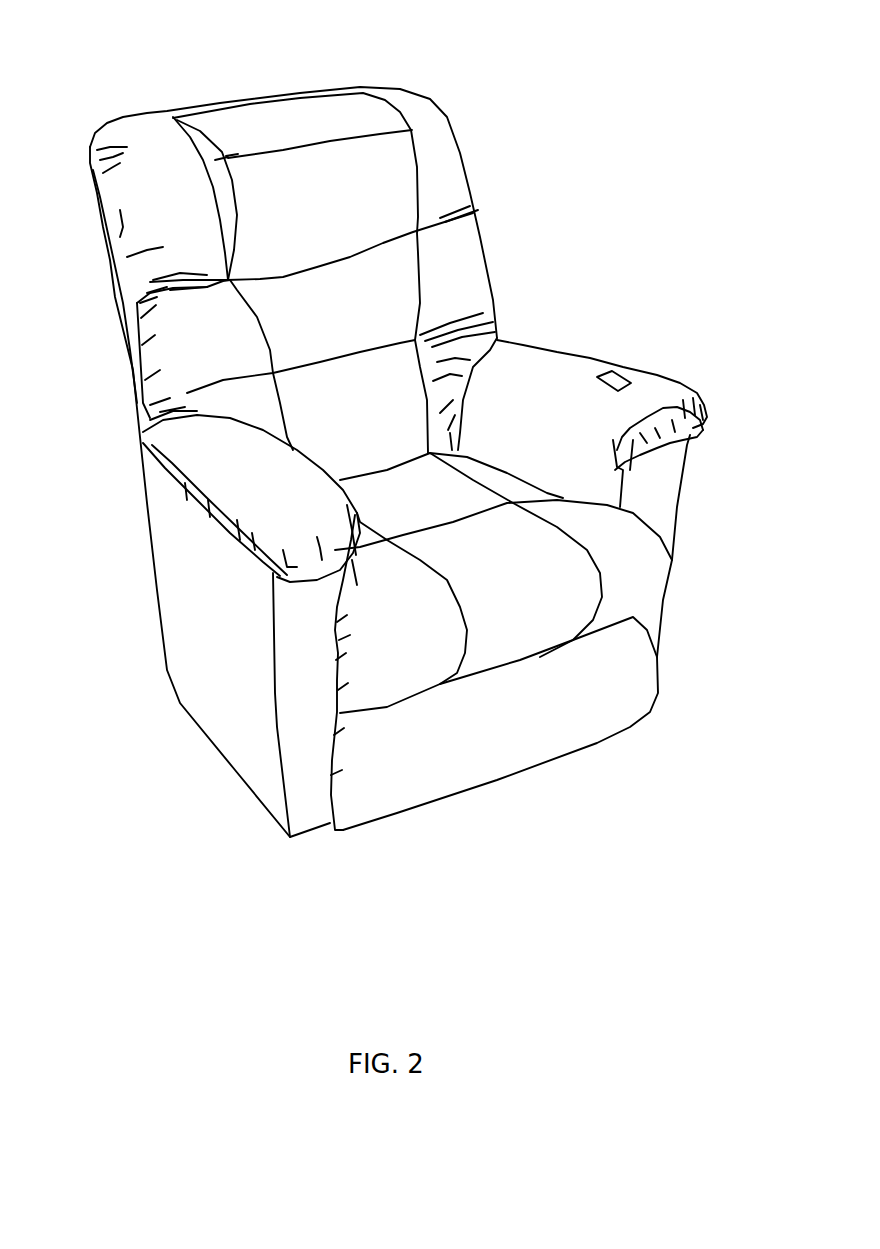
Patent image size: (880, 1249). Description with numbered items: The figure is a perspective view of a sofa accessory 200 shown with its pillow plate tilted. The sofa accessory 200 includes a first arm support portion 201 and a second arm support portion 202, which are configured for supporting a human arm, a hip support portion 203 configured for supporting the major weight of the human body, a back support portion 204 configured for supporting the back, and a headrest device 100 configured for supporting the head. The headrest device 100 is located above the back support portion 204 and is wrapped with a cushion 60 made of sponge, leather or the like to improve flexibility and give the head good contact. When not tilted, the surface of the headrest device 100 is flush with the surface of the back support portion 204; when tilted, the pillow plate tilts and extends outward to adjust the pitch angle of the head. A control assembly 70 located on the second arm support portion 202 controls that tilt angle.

The sofa accessory 200 is at (345, 70).
The headrest device 100 is at (247, 160).
The back support portion 204 is at (382, 373).
The cushion 60 is at (163, 353).
The first arm support portion 201 is at (223, 463).
The hip support portion 203 is at (413, 480).
The second arm support portion 202 is at (572, 372).
The control assembly 70 is at (633, 383).